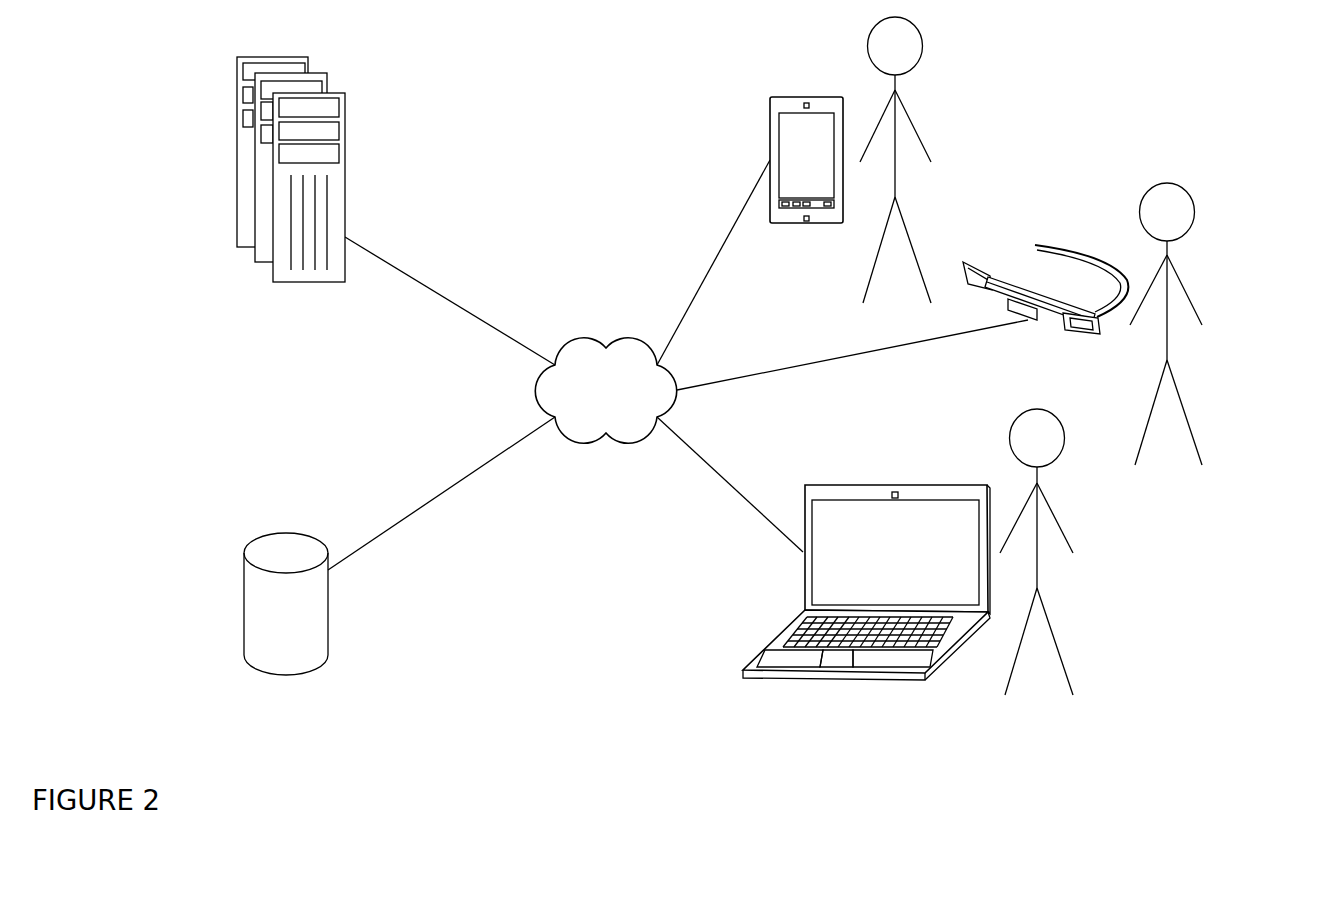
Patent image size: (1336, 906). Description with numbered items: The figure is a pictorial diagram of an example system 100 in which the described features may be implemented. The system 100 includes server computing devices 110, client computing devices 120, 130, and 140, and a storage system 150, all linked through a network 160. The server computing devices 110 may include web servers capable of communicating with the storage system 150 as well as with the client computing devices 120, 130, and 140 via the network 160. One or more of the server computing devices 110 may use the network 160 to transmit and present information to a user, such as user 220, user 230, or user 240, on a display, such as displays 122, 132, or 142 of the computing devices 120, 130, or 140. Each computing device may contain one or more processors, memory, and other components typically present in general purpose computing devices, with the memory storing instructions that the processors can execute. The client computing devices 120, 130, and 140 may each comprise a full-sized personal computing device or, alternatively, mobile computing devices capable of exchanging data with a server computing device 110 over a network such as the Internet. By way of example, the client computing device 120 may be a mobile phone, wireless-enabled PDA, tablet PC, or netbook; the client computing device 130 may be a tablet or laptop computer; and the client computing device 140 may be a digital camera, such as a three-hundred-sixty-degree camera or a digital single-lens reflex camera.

The system 100 is at (70, 755).
The server computing device 110 is at (345, 133).
The client computing device 120 is at (752, 160).
The display 122 is at (779, 156).
The client computing device 130 is at (1045, 283).
The display 132 is at (1092, 328).
The client computing device 140 is at (842, 582).
The display 142 is at (812, 592).
The storage system 150 is at (328, 627).
The network 160 is at (678, 365).
The user 220 is at (925, 150).
The user 230 is at (1197, 313).
The user 240 is at (1068, 542).